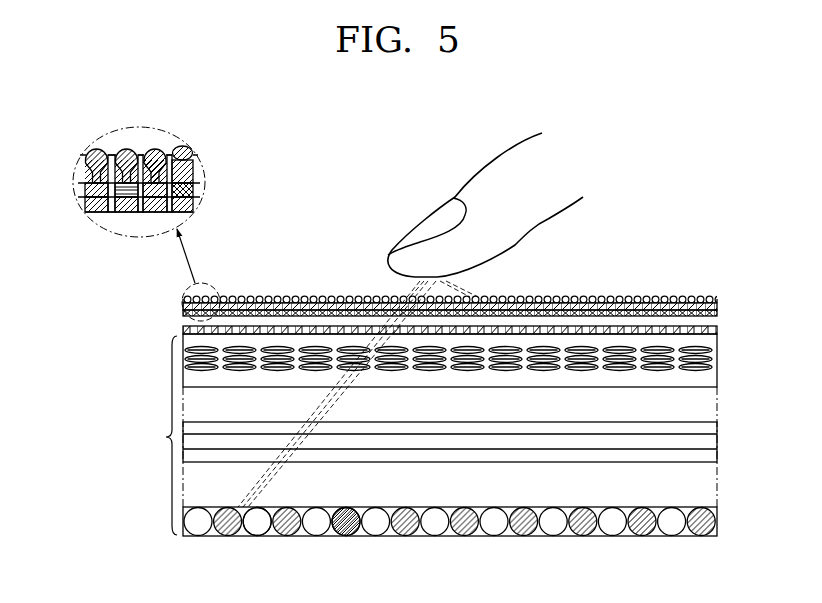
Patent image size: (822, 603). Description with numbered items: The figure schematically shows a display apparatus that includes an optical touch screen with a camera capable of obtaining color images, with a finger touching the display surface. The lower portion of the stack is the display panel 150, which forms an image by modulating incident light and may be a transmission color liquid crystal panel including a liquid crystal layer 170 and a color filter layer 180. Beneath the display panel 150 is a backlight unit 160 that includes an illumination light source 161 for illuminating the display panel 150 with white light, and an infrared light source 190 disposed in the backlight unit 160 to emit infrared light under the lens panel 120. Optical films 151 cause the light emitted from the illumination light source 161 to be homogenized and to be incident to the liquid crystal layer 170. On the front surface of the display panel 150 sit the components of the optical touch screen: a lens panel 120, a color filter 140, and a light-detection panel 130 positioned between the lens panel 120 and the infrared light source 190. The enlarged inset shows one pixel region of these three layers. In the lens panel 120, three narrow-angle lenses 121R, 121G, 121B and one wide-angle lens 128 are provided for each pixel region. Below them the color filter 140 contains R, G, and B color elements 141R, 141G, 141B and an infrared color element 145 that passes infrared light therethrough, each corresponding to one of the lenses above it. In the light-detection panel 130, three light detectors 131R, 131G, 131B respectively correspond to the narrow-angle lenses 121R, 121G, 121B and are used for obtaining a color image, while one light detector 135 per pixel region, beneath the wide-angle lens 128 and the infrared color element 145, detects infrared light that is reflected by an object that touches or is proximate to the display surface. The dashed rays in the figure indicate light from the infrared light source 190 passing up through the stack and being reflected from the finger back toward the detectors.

The lens panel 120 is at (721, 296).
The color filter 140 is at (721, 306).
The light-detection panel 130 is at (721, 316).
The color filter layer 180 is at (721, 331).
The liquid crystal layer 170 is at (719, 361).
The display panel 150 is at (153, 435).
The optical films 151 is at (716, 452).
The backlight unit 160 is at (721, 521).
The illumination light source 161 is at (257, 531).
The infrared light source 190 is at (345, 531).
The narrow-angle lens 121R is at (100, 147).
The narrow-angle lens 121G is at (126, 146).
The narrow-angle lens 121B is at (154, 147).
The wide-angle lens 128 is at (189, 147).
The color element 141R is at (92, 189).
The color element 141G is at (128, 197).
The color element 141B is at (158, 193).
The infrared color element 145 is at (197, 188).
The light detector 135 is at (193, 211).
The light detector 131R is at (88, 211).
The light detector 131G is at (118, 205).
The light detector 131B is at (151, 205).